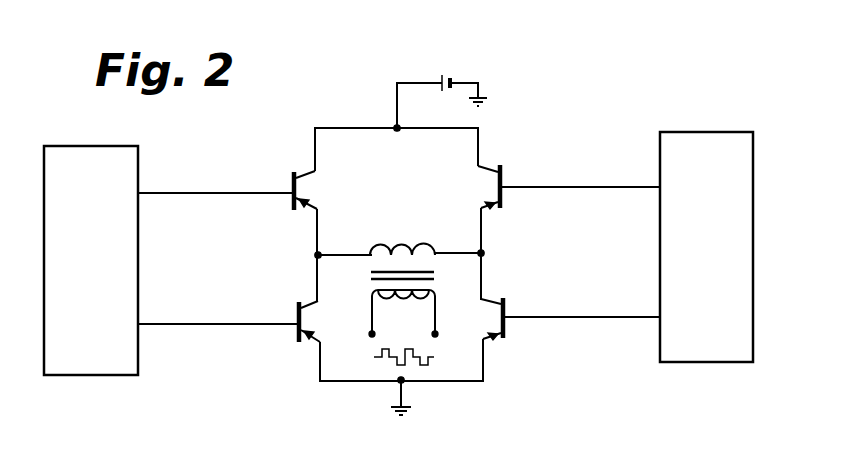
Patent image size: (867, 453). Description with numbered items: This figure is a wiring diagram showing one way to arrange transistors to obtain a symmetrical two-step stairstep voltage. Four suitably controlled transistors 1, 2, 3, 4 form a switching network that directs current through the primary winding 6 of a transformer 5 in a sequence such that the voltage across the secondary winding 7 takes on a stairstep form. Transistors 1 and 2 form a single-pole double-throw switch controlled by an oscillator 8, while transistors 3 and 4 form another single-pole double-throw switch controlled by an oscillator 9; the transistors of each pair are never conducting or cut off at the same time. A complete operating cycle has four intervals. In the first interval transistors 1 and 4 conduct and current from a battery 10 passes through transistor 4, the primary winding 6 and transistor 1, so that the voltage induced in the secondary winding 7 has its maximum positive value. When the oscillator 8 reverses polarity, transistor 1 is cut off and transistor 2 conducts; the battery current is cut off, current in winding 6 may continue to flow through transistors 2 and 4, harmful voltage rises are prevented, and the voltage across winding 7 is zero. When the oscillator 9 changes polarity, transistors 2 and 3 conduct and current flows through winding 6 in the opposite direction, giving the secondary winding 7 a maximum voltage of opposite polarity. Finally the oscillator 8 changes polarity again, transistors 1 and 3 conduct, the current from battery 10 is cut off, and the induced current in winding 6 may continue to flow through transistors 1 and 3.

The transistor 1 is at (290, 177).
The transistor 2 is at (296, 306).
The transistor 3 is at (502, 170).
The transistor 4 is at (506, 303).
The transformer 5 is at (438, 273).
The primary winding 6 is at (406, 246).
The secondary winding 7 is at (438, 293).
The oscillator 8 is at (88, 146).
The oscillator 9 is at (703, 132).
The battery 10 is at (452, 74).